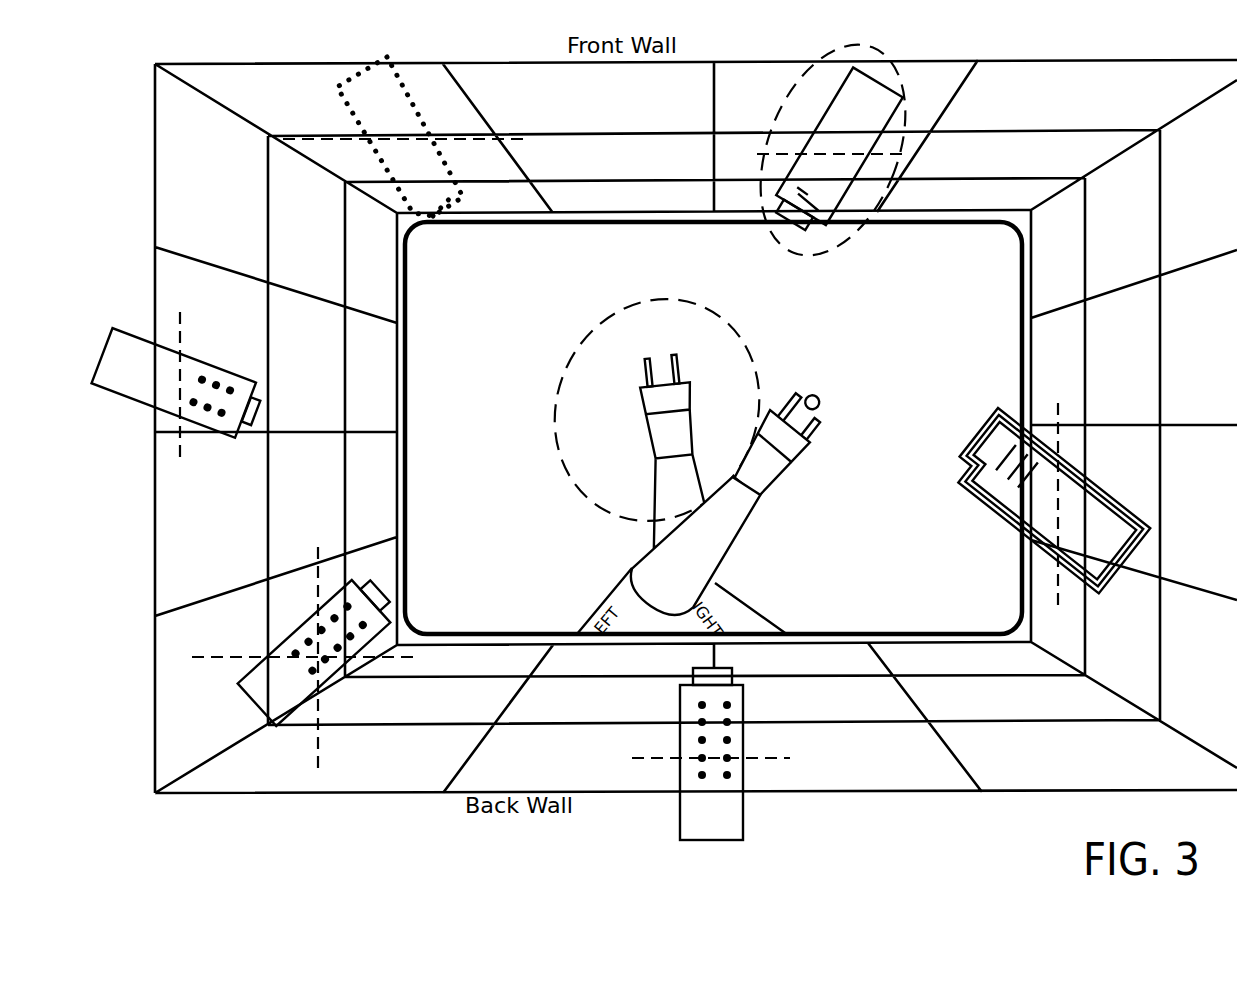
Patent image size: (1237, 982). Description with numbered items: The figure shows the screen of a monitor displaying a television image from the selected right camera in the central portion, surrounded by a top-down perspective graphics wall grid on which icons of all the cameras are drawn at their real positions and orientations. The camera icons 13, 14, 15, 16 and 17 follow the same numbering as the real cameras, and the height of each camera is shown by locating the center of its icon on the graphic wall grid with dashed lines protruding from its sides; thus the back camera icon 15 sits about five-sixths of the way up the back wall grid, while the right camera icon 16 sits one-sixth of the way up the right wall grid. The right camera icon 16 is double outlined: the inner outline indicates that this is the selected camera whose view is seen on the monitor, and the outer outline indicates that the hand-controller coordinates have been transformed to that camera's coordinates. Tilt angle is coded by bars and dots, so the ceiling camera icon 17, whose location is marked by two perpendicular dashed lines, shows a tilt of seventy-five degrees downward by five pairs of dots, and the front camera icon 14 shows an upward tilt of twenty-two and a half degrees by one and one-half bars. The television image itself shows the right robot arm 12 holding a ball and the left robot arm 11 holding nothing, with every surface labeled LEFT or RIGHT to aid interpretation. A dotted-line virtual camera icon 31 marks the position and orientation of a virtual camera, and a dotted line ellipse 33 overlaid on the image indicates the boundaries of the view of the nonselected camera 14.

The left robot arm icon 11 is at (645, 434).
The right robot arm icon 12 is at (786, 468).
The camera icon 13 is at (132, 398).
The front camera icon 14 is at (834, 100).
The back camera icon 15 is at (743, 812).
The right camera icon 16 is at (1122, 505).
The ceiling camera icon 17 is at (303, 701).
The virtual camera icon 31 is at (340, 97).
The dotted line ellipse 33 is at (634, 344).